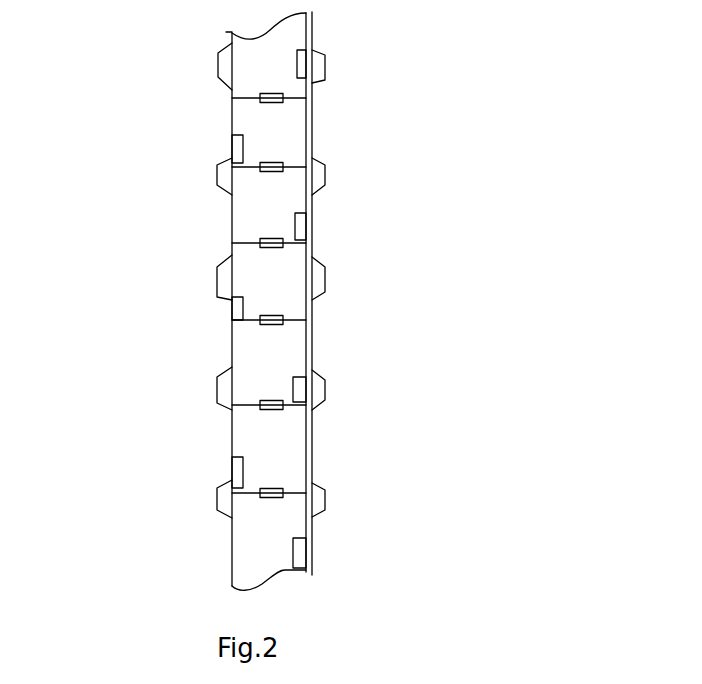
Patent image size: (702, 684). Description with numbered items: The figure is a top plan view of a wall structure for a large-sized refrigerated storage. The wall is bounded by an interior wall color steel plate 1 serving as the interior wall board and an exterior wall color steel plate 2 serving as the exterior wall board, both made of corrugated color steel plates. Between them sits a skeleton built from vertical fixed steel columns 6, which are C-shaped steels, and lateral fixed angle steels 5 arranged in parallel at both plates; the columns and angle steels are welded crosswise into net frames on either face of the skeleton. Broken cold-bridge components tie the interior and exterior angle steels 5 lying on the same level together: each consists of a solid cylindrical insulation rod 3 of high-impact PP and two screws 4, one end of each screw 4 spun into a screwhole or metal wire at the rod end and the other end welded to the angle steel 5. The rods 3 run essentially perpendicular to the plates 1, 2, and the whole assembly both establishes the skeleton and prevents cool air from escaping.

The interior wall color steel plate 1 is at (215, 490).
The exterior wall color steel plate 2 is at (310, 498).
The insulation rod 3 is at (275, 318).
The screw 4 is at (245, 243).
The lateral fixed angle steel 5 is at (312, 120).
The vertical fixed steel column 6 is at (293, 388).